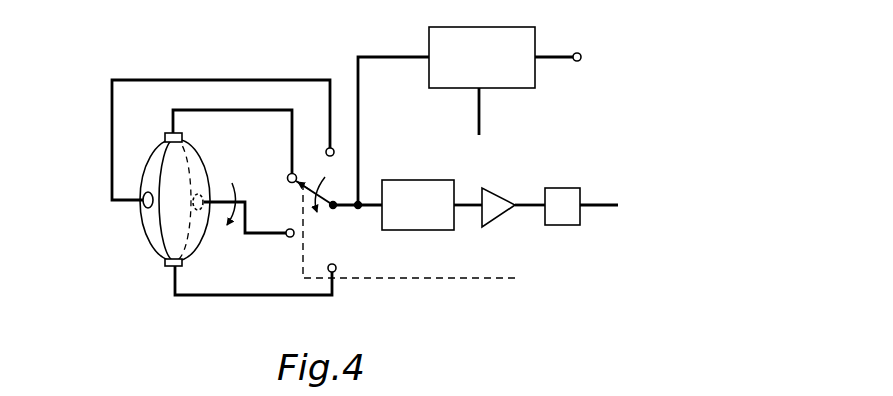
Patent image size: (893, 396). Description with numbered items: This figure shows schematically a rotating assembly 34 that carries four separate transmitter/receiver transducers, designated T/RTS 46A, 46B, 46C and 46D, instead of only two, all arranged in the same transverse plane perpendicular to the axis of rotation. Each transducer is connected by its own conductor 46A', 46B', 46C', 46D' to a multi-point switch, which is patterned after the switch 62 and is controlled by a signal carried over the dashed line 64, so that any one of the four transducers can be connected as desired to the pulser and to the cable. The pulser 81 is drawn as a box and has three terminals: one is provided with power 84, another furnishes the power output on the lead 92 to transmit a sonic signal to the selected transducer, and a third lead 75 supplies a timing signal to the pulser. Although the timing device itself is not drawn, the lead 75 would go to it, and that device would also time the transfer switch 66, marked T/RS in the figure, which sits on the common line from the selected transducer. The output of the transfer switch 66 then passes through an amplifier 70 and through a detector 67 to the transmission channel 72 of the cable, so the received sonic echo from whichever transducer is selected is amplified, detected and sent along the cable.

The rotating assembly 34 is at (152, 240).
The T/RTS 46A is at (147, 272).
The conductor 46A' is at (255, 293).
The T/RTS 46B is at (222, 184).
The conductor 46B' is at (249, 233).
The T/RTS 46C is at (151, 127).
The conductor 46C' is at (232, 142).
The T/RTS 46D is at (124, 210).
The conductor 46D' is at (223, 120).
The switch 62 is at (311, 166).
The dashed line 64 is at (425, 278).
The transfer switch 66 is at (398, 180).
The detector 67 is at (556, 188).
The amplifier 70 is at (502, 194).
The transmission channel 72 is at (592, 208).
The lead 75 is at (479, 127).
The pulser 81 is at (535, 88).
The power 84 is at (546, 57).
The lead 92 is at (358, 110).